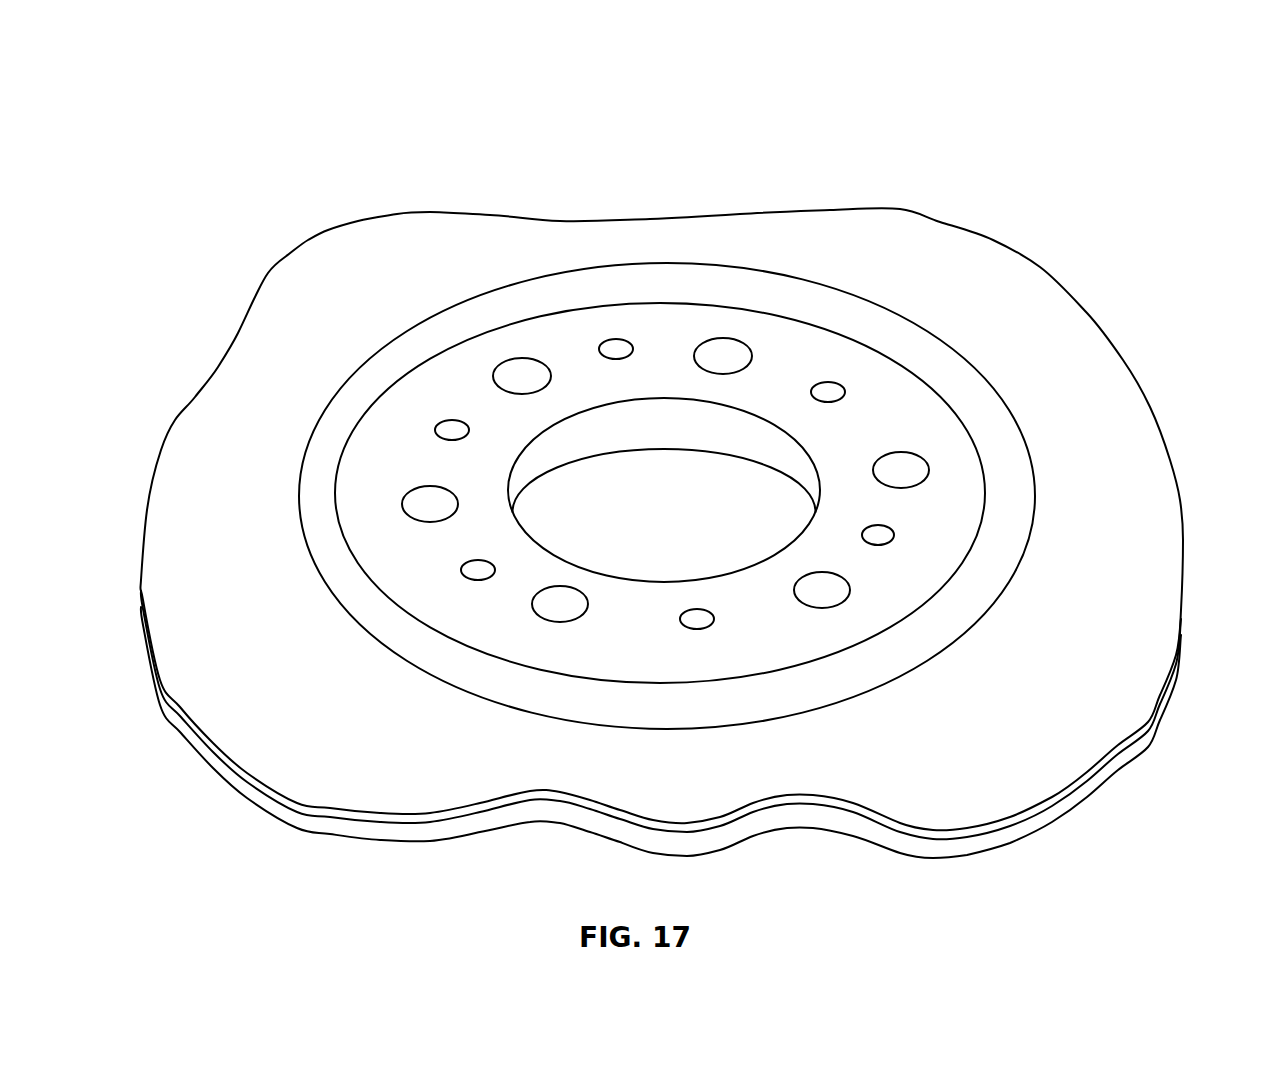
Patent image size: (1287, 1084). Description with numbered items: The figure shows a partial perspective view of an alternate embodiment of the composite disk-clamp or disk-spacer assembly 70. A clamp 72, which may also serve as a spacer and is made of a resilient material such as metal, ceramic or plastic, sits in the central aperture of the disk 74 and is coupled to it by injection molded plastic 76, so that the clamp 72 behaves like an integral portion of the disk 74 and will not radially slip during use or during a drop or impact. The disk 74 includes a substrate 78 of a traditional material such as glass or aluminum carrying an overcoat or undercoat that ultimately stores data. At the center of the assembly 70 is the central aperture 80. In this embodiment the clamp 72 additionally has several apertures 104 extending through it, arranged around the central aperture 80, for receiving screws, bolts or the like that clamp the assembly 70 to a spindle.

The composite disk-clamp assembly 70 is at (311, 172).
The clamp 72 is at (798, 345).
The disk 74 is at (1129, 459).
The injection molded plastic 76 is at (923, 355).
The substrate 78 is at (751, 832).
The central aperture 80 is at (678, 418).
The apertures 104 is at (523, 361).